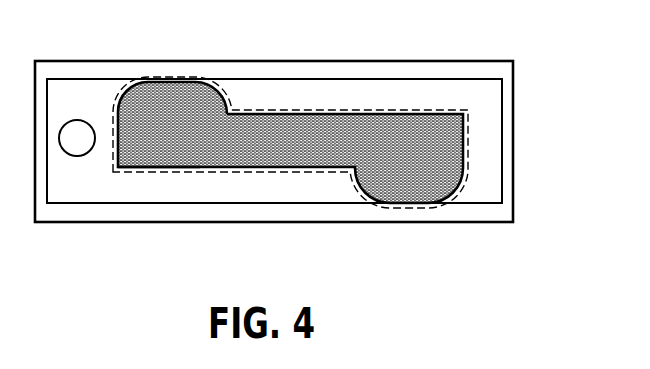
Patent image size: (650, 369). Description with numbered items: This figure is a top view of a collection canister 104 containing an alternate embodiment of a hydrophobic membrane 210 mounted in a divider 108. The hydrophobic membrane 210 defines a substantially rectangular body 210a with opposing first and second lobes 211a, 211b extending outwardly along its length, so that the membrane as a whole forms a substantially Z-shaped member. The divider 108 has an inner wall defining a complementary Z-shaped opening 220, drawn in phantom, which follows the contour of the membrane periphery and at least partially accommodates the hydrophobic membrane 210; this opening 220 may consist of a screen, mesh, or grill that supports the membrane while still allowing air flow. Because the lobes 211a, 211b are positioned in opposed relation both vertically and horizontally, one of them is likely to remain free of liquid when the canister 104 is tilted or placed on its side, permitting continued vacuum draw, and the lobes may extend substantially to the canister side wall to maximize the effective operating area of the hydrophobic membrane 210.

The canister 104 is at (425, 61).
The divider 108 is at (502, 147).
The hydrophobic membrane 210 is at (300, 128).
The substantially rectangular body 210a is at (150, 165).
The first lobe 211a is at (180, 92).
The second lobe 211b is at (410, 197).
The Z-shaped opening 220 is at (245, 168).